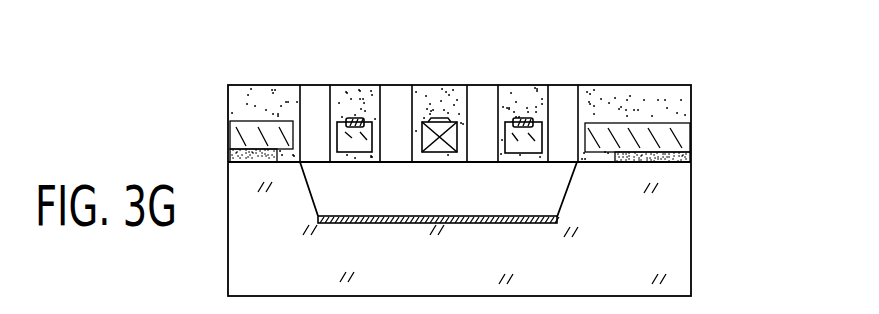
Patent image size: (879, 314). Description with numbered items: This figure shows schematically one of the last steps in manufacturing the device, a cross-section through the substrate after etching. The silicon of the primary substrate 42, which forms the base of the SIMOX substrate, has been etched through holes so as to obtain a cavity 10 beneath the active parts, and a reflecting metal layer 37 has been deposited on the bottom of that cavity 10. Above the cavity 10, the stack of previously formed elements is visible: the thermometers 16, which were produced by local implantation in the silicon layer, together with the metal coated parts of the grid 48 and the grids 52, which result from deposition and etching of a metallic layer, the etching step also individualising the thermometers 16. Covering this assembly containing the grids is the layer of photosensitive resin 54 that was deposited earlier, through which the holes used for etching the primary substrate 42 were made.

The cavity 10 is at (452, 204).
The thermometer 16 is at (450, 118).
The reflecting metal layer 37 is at (533, 225).
The primary substrate 42 is at (685, 245).
The grid 48 is at (527, 117).
The grid 52 is at (336, 136).
The layer of photosensitive resin 54 is at (688, 107).